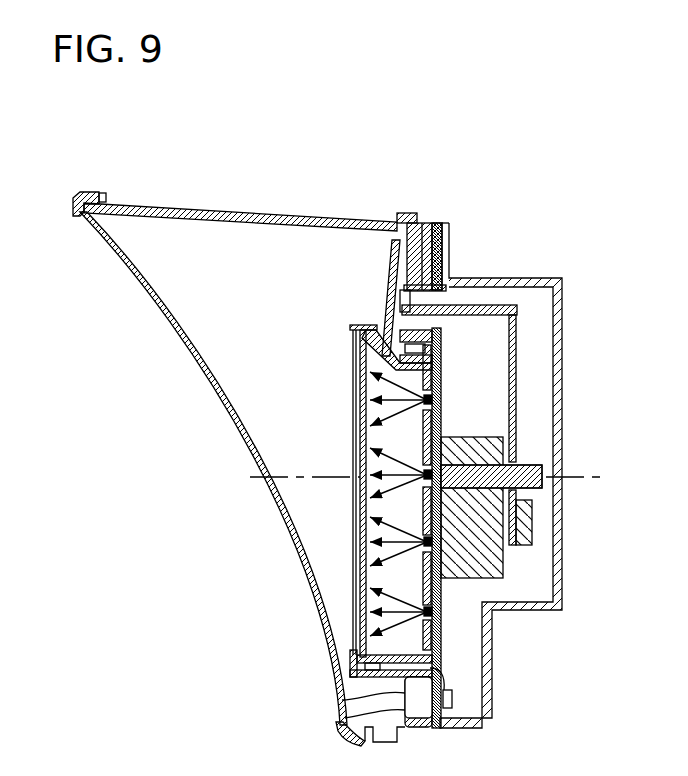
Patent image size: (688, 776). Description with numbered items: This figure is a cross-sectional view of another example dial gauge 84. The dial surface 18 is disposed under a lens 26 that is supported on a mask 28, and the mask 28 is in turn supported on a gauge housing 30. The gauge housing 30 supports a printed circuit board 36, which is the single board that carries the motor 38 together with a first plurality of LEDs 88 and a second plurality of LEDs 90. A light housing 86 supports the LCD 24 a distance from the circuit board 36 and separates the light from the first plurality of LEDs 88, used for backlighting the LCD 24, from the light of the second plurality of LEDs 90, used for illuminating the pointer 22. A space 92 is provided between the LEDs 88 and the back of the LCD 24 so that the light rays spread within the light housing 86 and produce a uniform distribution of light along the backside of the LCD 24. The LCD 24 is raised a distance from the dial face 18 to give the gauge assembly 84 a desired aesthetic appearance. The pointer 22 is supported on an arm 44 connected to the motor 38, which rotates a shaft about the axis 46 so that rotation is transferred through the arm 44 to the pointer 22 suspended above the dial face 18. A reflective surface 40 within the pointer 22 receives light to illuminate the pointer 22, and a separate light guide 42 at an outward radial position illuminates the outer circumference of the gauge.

The dial surface 18 is at (342, 704).
The pointer 22 is at (393, 246).
The LCD 24 is at (356, 470).
The lens 26 is at (72, 200).
The mask 28 is at (258, 212).
The gauge housing 30 is at (418, 222).
The printed circuit board 36 is at (440, 622).
The motor 38 is at (485, 570).
The reflective surface 40 is at (405, 327).
The light guide 42 is at (440, 252).
The arm 44 is at (520, 310).
The axis 46 is at (578, 465).
The dial gauge 84 is at (380, 151).
The light housing 86 is at (440, 650).
The first plurality of LEDs 88 is at (437, 465).
The second plurality of LEDs 90 is at (442, 350).
The space 92 is at (405, 580).